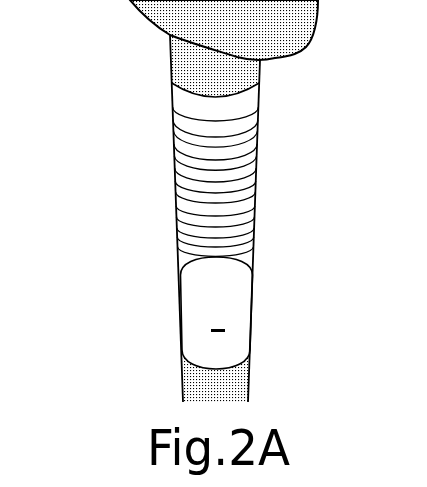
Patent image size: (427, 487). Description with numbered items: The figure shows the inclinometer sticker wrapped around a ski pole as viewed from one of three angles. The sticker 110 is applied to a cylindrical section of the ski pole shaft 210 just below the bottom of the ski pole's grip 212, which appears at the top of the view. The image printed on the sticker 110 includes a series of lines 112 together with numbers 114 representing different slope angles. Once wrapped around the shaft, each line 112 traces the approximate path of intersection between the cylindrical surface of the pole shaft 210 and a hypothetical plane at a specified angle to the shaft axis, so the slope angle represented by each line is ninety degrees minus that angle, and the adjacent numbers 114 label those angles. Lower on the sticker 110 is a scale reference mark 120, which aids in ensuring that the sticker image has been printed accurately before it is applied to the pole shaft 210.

The sticker 110 is at (186, 318).
The lines 112 is at (187, 178).
The numbers 114 is at (240, 173).
The scale reference mark 120 is at (220, 323).
The ski pole shaft 210 is at (176, 66).
The grip 212 is at (307, 28).